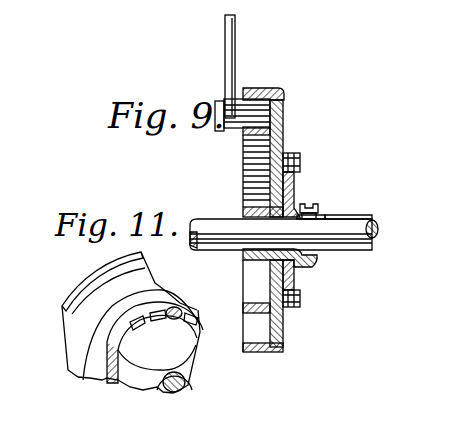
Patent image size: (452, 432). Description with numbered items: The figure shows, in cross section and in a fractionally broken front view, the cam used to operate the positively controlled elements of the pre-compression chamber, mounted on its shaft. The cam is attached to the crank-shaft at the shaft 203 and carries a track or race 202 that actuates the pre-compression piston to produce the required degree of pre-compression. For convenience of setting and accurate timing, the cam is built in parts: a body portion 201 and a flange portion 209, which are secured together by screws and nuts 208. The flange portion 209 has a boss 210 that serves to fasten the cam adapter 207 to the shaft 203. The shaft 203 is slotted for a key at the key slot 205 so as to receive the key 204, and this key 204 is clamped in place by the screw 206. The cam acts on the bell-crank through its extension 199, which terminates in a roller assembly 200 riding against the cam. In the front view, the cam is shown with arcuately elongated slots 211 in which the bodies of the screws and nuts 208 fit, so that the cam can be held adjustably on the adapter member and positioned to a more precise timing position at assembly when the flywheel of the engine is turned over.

In FIG. 9, the extension 199 is at (225, 53).
In FIG. 9, the roller assembly 200 is at (253, 113).
In FIG. 9, the body portion 201 is at (263, 88).
In FIG. 11, the body portion 201 is at (103, 267).
In FIG. 9, the track or race 202 is at (283, 88).
In FIG. 11, the track or race 202 is at (137, 273).
In FIG. 9, the shaft 203 is at (370, 239).
In FIG. 11, the shaft 203 is at (190, 385).
In FIG. 9, the key 204 is at (331, 218).
In FIG. 9, the key slot 205 is at (333, 216).
In FIG. 9, the screw 206 is at (332, 217).
In FIG. 9, the cam adapter 207 is at (328, 218).
In FIG. 9, the screws and nuts 208 is at (316, 206).
In FIG. 11, the screws and nuts 208 is at (172, 322).
In FIG. 9, the flange portion 209 is at (300, 158).
In FIG. 9, the boss 210 is at (315, 258).
In FIG. 11, the arcuately elongated slots 211 is at (107, 368).